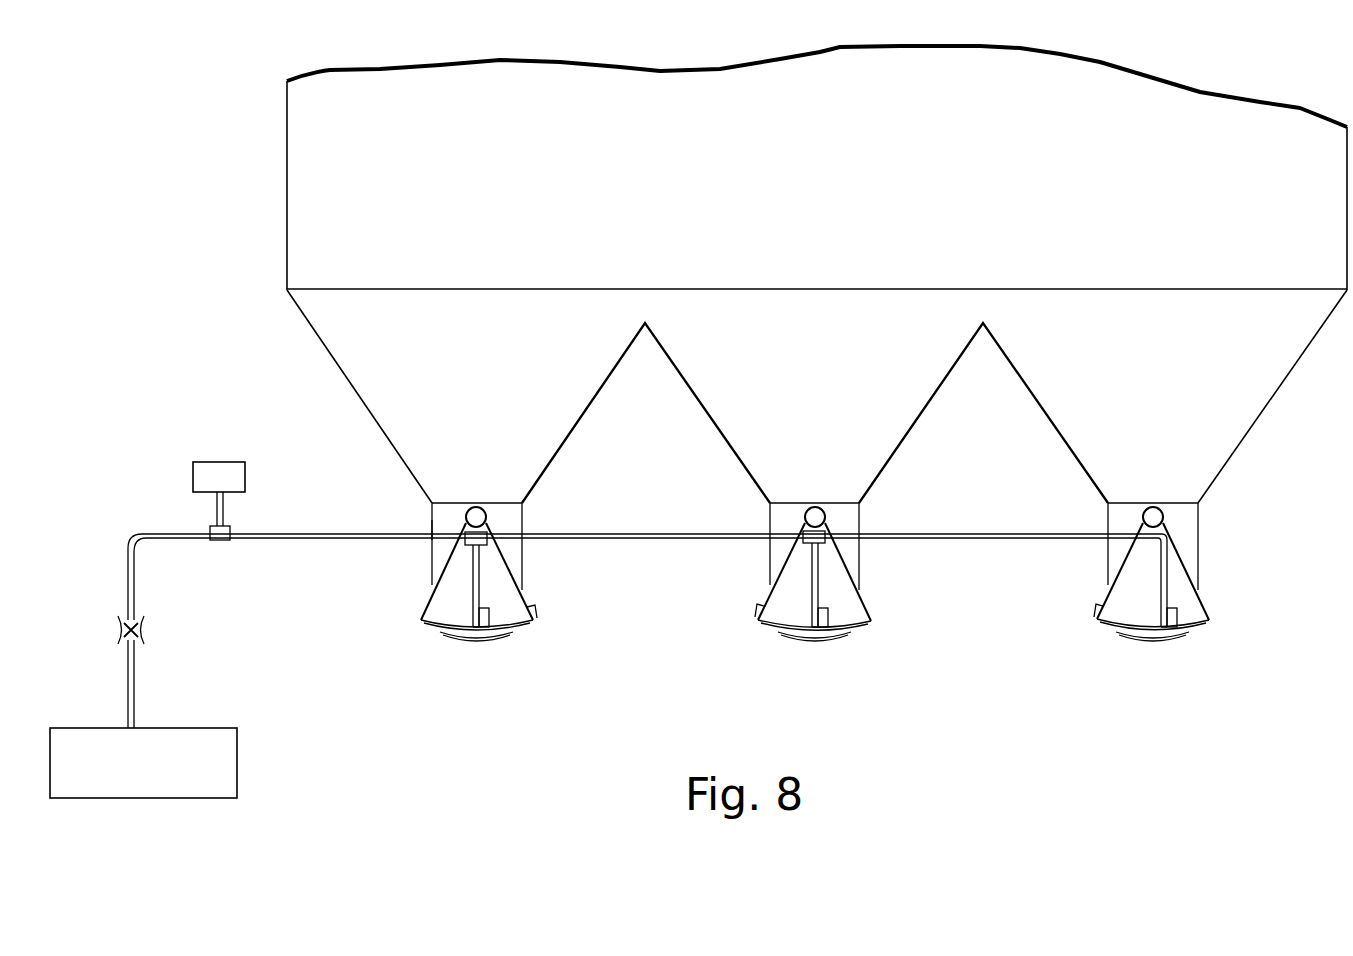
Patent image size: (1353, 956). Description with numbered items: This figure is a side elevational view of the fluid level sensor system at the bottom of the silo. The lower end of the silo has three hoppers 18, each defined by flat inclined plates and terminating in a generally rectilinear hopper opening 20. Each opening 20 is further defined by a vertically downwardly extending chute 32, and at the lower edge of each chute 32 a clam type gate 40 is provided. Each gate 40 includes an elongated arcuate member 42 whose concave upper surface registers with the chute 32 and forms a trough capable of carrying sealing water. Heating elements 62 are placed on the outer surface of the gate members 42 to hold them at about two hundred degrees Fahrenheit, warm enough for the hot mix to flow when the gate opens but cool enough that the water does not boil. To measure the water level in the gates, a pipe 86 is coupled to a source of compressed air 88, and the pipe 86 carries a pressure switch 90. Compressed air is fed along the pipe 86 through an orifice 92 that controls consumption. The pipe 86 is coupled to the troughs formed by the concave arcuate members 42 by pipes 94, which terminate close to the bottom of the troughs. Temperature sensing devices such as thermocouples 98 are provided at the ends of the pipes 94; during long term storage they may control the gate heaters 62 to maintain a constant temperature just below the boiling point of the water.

The hopper 18 is at (458, 384).
The hopper opening 20 is at (448, 510).
The chute 32 is at (431, 520).
The clam type gate 40 is at (538, 555).
The arcuate member 42 is at (523, 628).
The heating element 62 is at (442, 637).
The pipe 86 is at (291, 533).
The source of compressed air 88 is at (172, 738).
The pressure switch 90 is at (245, 462).
The orifice 92 is at (112, 628).
The pipe 94 is at (815, 585).
The thermocouple 98 is at (828, 617).